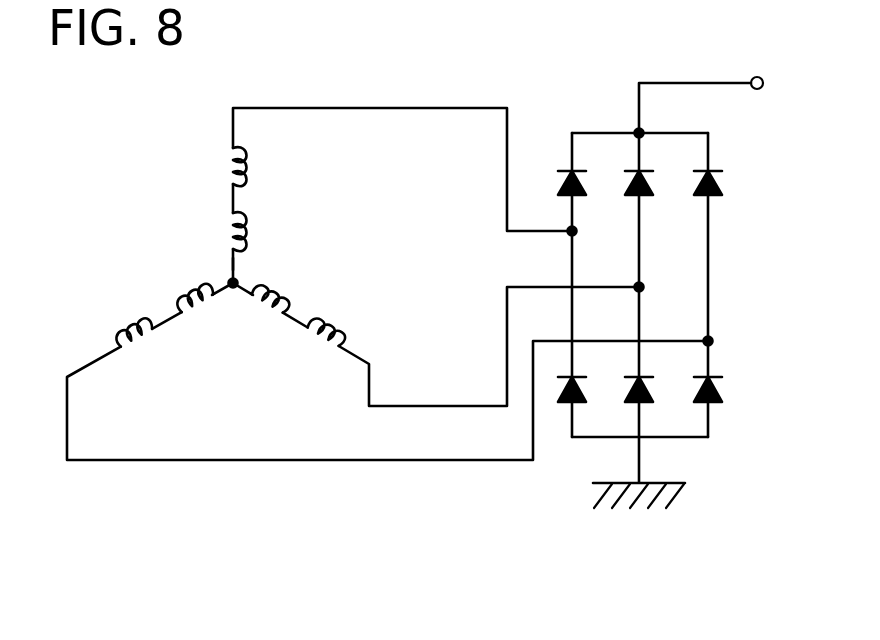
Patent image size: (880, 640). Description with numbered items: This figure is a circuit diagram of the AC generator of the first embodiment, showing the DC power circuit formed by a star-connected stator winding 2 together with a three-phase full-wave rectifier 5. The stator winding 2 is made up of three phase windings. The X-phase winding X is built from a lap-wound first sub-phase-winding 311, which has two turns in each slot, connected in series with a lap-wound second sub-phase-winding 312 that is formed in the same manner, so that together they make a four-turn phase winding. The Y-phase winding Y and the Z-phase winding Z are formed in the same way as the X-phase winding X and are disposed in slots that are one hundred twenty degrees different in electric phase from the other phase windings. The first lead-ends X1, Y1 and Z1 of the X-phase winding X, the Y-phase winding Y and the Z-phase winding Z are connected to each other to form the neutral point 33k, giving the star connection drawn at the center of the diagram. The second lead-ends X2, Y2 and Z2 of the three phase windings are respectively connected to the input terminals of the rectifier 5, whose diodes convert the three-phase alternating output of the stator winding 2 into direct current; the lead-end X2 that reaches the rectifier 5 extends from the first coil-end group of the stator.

The stator winding of generator 2 is at (366, 106).
The first sub-phase-winding 311 is at (248, 165).
The second sub-phase-winding 312 is at (248, 227).
The X-phase winding X is at (253, 199).
The Y-phase winding Y is at (168, 313).
The Z-phase winding Z is at (298, 312).
The neutral point 33k is at (231, 279).
The first lead-end of X-phase winding X1 is at (236, 263).
The first lead-end of Y-phase winding Y1 is at (217, 297).
The first lead-end of Z-phase winding Z1 is at (243, 298).
The second lead-end of X-phase winding X2 is at (566, 229).
The second lead-end of Y-phase winding Y2 is at (711, 340).
The second lead-end of Z-phase winding Z2 is at (642, 287).
The rectifier 5 is at (710, 195).